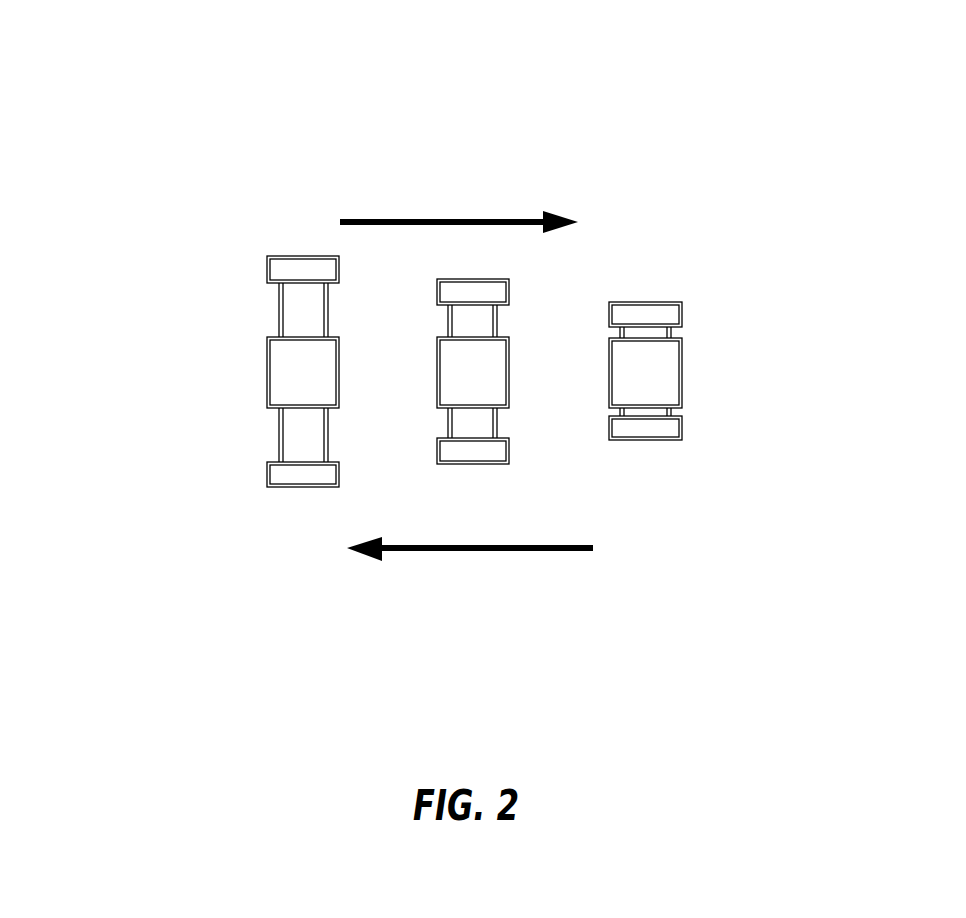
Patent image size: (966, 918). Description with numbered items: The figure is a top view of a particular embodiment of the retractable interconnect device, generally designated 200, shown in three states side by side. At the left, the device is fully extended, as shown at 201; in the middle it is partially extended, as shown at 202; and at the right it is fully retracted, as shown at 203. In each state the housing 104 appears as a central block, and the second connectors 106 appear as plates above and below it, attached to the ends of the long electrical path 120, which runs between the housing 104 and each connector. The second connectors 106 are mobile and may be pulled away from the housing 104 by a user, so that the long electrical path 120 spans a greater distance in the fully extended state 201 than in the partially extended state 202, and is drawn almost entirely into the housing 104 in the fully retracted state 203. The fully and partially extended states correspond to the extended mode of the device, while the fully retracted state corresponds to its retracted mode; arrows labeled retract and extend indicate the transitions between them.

The top view of the retractable interconnect device 200 is at (868, 81).
The fully extended state 201 is at (263, 393).
The partially extended state 202 is at (473, 391).
The fully retracted state 203 is at (645, 396).
The housing 104 is at (267, 373).
The second connectors 106 is at (267, 273).
The long electrical path 120 is at (283, 312).